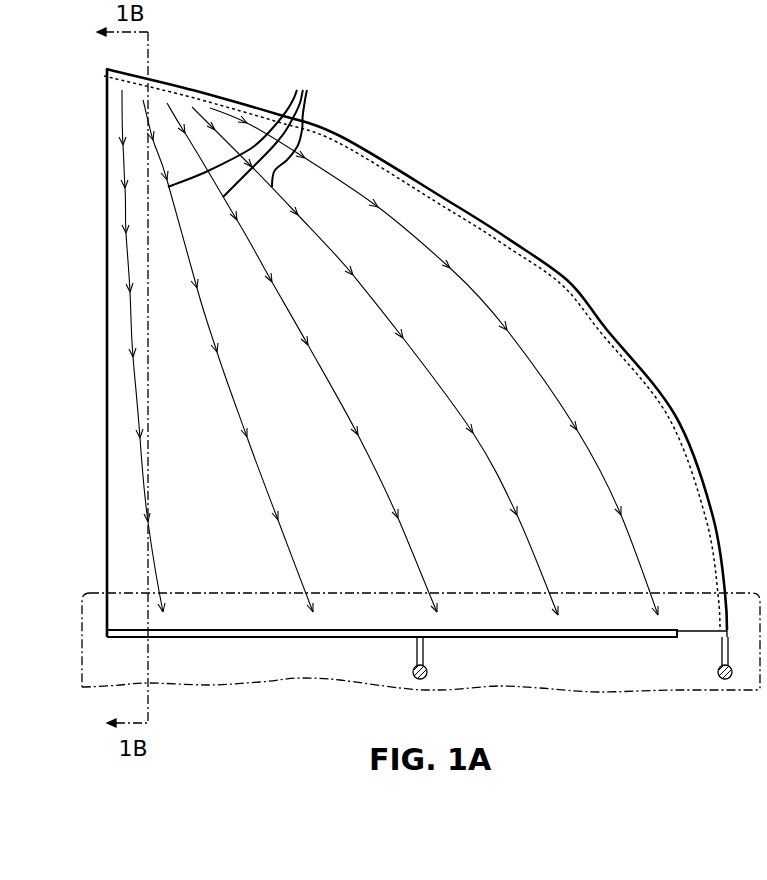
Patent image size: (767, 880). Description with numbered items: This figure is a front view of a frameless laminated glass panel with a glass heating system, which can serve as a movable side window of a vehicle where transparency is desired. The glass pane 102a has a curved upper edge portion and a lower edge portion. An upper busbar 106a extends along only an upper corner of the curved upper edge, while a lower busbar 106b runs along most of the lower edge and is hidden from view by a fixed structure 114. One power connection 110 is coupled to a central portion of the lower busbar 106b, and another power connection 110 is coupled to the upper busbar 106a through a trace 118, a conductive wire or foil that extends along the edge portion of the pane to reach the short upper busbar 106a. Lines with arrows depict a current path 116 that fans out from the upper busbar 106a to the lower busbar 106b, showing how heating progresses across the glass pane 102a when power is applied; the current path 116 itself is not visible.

The glass pane 102a is at (378, 348).
The upper busbar 106a is at (164, 83).
The lower busbar 106b is at (510, 639).
The power connections 110 is at (416, 640).
The fixed structure 114 is at (207, 686).
The current path 116 is at (242, 136).
The trace 118 is at (587, 301).